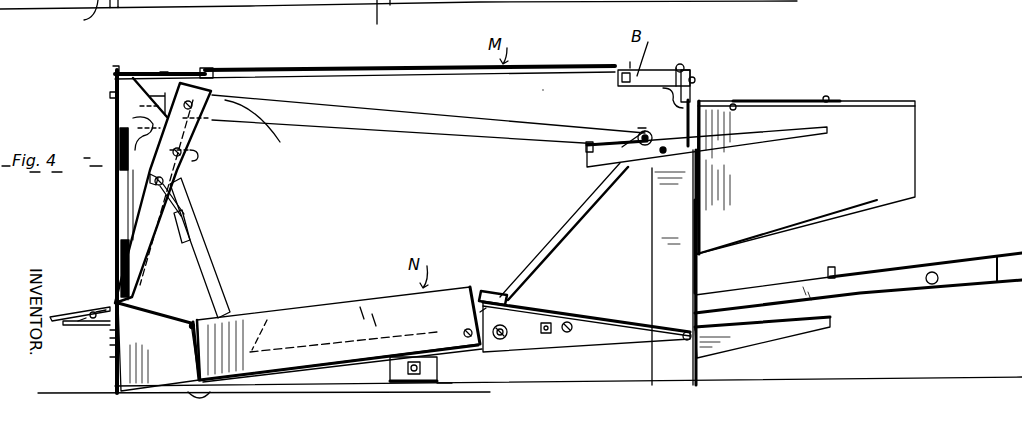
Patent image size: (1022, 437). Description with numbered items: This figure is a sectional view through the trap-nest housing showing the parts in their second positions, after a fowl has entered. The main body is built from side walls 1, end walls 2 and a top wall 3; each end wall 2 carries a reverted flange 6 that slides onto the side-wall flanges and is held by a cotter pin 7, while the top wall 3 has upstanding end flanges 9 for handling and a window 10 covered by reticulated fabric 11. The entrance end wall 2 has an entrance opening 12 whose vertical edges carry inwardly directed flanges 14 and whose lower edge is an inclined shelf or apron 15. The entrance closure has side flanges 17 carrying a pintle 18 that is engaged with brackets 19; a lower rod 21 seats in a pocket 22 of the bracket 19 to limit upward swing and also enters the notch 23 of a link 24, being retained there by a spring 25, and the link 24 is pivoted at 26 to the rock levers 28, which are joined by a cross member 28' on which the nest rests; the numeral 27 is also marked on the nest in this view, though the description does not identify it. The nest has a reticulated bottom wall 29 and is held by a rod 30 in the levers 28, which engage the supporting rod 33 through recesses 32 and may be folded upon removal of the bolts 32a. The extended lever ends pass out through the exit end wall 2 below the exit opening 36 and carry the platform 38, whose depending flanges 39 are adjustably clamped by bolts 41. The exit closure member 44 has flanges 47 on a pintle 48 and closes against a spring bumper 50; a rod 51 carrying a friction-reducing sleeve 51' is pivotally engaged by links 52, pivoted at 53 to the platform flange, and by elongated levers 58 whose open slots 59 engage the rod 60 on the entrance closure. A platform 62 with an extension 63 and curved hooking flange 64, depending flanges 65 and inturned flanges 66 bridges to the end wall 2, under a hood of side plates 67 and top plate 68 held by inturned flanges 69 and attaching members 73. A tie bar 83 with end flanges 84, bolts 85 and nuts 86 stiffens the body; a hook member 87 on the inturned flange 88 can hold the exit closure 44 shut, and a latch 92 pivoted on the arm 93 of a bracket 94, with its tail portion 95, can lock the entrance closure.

The side wall 1 is at (543, 90).
The end wall 2 is at (116, 381).
The top wall 3 is at (435, 67).
The reverted flange 6 is at (371, 25).
The cotter pin 7 is at (240, 400).
The upstanding flange 9 is at (117, 68).
The window 10 is at (205, 68).
The reticulated fabric 11 is at (172, 78).
The entrance opening 12 is at (117, 258).
The inwardly directed flange 14 is at (118, 226).
The shelf or apron 15 is at (164, 318).
The inwardly disposed flange 17 is at (207, 133).
The supporting rod or pintle 18 is at (196, 156).
The bracket 19 is at (148, 80).
The rod 21 is at (173, 182).
The pocket or recess 22 is at (153, 112).
The notch or recess 23 is at (154, 178).
The link or lever 24 is at (203, 273).
The spring 25 is at (193, 218).
The pivotal connection 26 is at (267, 320).
The panel web 27 is at (335, 314).
The rock lever 28 is at (586, 336).
The cross member 28' is at (189, 381).
The reticulated bottom wall 29 is at (390, 342).
The rod 30 is at (490, 315).
The recess 32 is at (504, 328).
The bolt 32a is at (546, 334).
The supporting rod 33 is at (567, 315).
The exit opening 36 is at (697, 277).
The platform 38 is at (897, 271).
The depending flange 39 is at (1010, 280).
The bolt 41 is at (936, 283).
The closure member 44 is at (603, 143).
The inwardly disposed flange 47 is at (631, 168).
The supporting rod or pintle 48 is at (668, 170).
The spring member or bumper 50 is at (665, 92).
The rod 51 is at (656, 134).
The sleeve 51' is at (637, 122).
The lever or link 52 is at (576, 201).
The pivotal connection 53 is at (490, 292).
The elongated lever 58 is at (462, 129).
The open slot 59 is at (164, 70).
The rod 60 is at (265, 127).
The platform 62 is at (787, 318).
The extension 63 is at (684, 330).
The curved flange 64 is at (686, 338).
The depending flange 65 is at (805, 330).
The inturned flange 66 is at (698, 347).
The side plate 67 is at (902, 148).
The top plate 68 is at (794, 100).
The inturned flange 69 is at (700, 234).
The removable attaching member 73 is at (840, 262).
The tie bar 83 is at (440, 382).
The flange 84 is at (390, 373).
The bolt 85 is at (417, 362).
The clamping nut 86 is at (468, 333).
The hook member 87 is at (665, 67).
The inturned flange 88 is at (690, 64).
The latch 92 is at (72, 311).
The outstanding arm 93 is at (82, 339).
The bracket 94 is at (110, 347).
The tail portion 95 is at (50, 317).